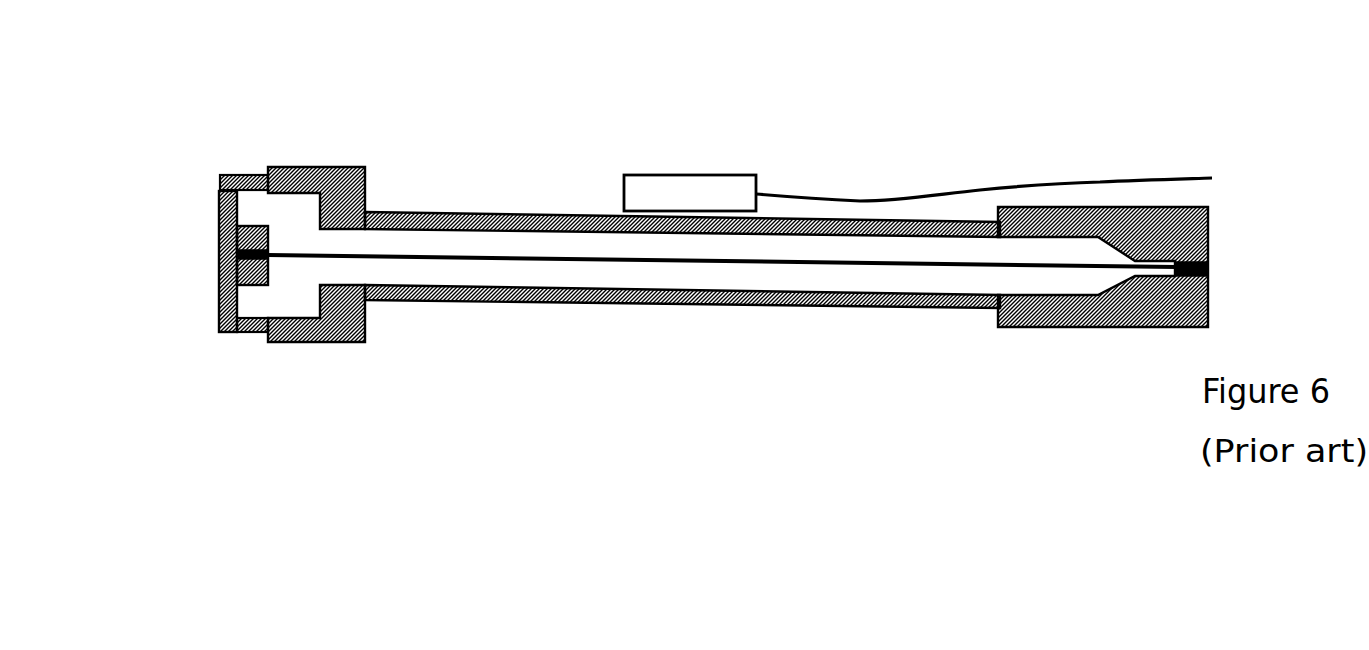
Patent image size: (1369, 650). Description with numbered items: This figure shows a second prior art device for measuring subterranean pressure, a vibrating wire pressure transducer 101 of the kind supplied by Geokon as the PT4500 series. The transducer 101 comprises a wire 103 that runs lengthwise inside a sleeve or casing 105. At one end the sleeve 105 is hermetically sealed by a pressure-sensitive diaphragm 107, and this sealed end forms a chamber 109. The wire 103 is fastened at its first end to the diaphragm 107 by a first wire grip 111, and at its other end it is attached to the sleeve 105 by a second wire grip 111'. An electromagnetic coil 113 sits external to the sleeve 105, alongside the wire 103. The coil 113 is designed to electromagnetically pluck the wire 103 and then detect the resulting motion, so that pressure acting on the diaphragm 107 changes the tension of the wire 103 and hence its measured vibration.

The transducer 101 is at (905, 142).
The wire 103 is at (613, 267).
The sleeve 105 is at (925, 308).
The pressure-sensitive diaphragm 107 is at (219, 299).
The chamber 109 is at (275, 208).
The first wire grip 111 is at (321, 321).
The second wire grip 111' is at (1253, 228).
The electromagnetic coil 113 is at (618, 184).